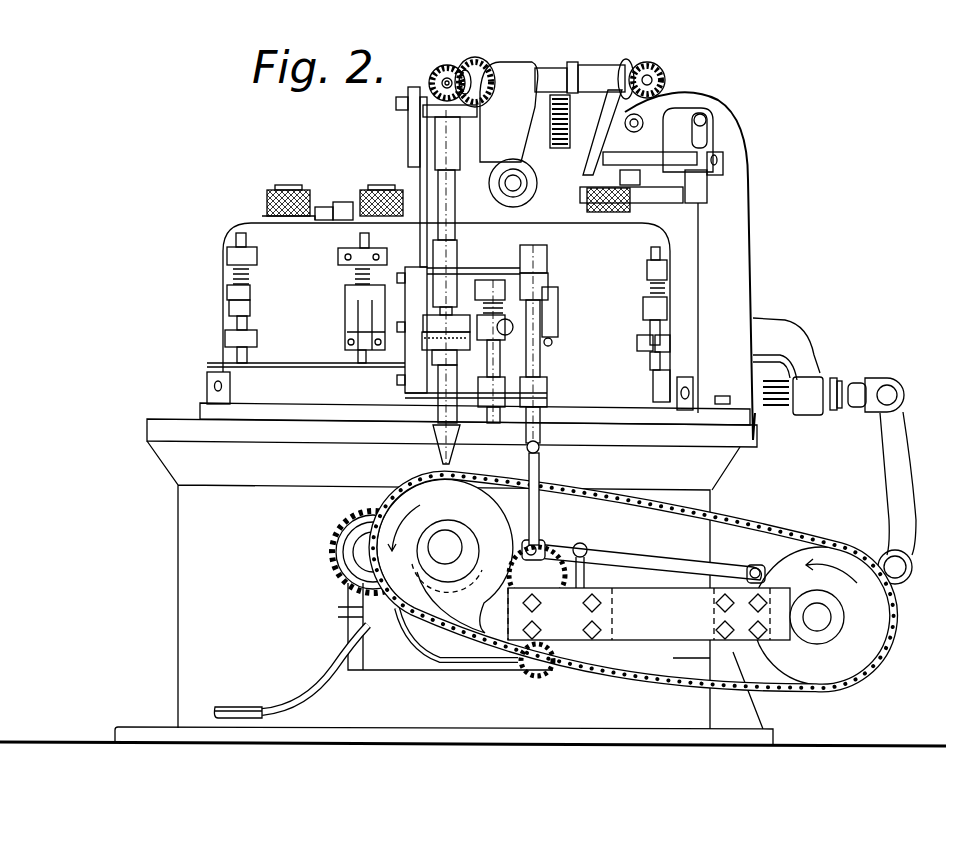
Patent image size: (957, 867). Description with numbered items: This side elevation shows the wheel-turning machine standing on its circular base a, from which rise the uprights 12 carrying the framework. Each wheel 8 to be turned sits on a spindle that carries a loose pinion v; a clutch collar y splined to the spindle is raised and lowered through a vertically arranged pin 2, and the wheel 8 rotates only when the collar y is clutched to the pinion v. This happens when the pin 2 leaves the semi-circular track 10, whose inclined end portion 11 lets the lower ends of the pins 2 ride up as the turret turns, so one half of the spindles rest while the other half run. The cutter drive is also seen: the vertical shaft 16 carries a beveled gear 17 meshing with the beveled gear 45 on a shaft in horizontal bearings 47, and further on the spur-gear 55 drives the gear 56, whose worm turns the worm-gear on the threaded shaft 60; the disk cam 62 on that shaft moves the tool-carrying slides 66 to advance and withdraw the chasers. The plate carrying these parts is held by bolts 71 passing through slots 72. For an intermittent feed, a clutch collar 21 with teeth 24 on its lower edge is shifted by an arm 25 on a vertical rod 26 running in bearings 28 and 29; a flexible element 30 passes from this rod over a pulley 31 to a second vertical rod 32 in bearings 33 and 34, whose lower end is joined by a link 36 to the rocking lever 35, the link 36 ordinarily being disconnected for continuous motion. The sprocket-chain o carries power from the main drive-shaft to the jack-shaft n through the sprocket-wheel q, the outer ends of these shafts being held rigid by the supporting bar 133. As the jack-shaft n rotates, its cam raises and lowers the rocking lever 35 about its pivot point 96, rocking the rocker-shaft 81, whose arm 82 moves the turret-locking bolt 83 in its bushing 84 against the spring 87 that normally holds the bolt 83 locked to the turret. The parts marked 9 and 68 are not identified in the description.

The vertically arranged pin 2 is at (655, 358).
The wheels 8 is at (300, 187).
The back plate 9 is at (222, 288).
The semi-circular track 10 is at (273, 363).
The inclined end portion 11 is at (463, 403).
The uprights 12 is at (752, 283).
The vertical shaft 16 is at (412, 225).
The beveled gear 17 is at (413, 112).
The clutch collar 21 is at (437, 317).
The teeth 24 is at (422, 338).
The arm 25 is at (552, 341).
The vertical rod 26 is at (500, 365).
The bearing 28 is at (545, 375).
The bearing 29 is at (483, 280).
The flexible element 30 is at (487, 213).
The pulley 31 is at (440, 178).
The second vertical rod 32 is at (545, 302).
The bearing 33 is at (547, 250).
The bearing 34 is at (547, 398).
The rocking lever 35 is at (548, 553).
The link 36 is at (540, 470).
The beveled gear 45 is at (462, 60).
The horizontal bearings 47 is at (505, 75).
The spur-gear 55 is at (566, 62).
The gear 56 is at (527, 116).
The shaft 60 is at (755, 143).
The disk cam 62 is at (713, 135).
The tool-carrying slides 66 is at (700, 195).
The pivot 68 is at (643, 121).
The bolts 71 is at (668, 133).
The slots 72 is at (681, 128).
The rocker-shaft 81 is at (913, 563).
The arm 82 is at (907, 467).
The turret-locking bolt 83 is at (693, 387).
The bushing 84 is at (836, 412).
The spring 87 is at (787, 363).
The pivot point 96 is at (583, 550).
The supporting bar 133 is at (649, 611).
The circular base portion a is at (200, 556).
The jack-shaft n is at (820, 617).
The sprocket-chain o is at (757, 520).
The sprocket-wheel q is at (873, 618).
The pinions v is at (340, 303).
The clutch collar y is at (673, 293).